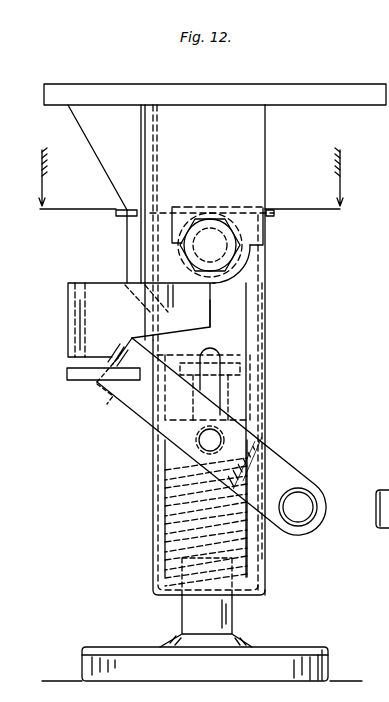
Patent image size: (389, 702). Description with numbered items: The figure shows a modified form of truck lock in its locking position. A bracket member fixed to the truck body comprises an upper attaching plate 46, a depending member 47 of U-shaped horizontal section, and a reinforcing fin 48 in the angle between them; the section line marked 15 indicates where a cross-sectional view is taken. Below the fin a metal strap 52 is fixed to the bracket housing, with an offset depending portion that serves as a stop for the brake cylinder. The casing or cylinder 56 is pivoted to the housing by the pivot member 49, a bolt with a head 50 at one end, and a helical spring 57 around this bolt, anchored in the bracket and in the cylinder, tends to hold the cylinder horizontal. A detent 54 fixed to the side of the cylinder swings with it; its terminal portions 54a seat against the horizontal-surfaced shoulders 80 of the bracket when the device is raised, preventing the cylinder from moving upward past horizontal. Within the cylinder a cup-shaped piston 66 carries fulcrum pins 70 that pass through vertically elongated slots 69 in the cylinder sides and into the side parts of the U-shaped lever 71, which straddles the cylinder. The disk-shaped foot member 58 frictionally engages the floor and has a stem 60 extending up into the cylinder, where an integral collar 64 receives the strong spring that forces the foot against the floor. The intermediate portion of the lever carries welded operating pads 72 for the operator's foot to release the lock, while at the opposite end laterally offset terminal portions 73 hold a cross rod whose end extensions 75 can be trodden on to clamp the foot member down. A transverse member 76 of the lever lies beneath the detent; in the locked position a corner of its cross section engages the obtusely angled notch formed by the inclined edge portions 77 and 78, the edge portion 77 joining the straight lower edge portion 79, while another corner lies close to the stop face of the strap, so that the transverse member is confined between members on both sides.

The upper attaching plate 46 is at (308, 97).
The depending member 47 is at (252, 150).
The reinforcing fin 48 is at (93, 127).
The section line 15- 15 is at (191, 178).
The pivot member 49 is at (247, 232).
The head 50 is at (228, 260).
The metal strap 52 is at (127, 258).
The detent 54 is at (82, 312).
The terminal portions of the detent 54a is at (210, 303).
The cylinder 56 is at (240, 330).
The helical spring 57 is at (240, 208).
The foot member 58 is at (284, 655).
The stem 60 is at (197, 613).
The collar 64 is at (266, 563).
The piston 66 is at (245, 352).
The slots 69 is at (215, 385).
The fulcrum pins 70 is at (200, 440).
The lever 71 is at (291, 473).
The operating pads 72 is at (80, 382).
The laterally offset terminal portions 73 is at (301, 483).
The end extensions 75 is at (303, 514).
The transverse member 76 is at (113, 398).
The inclined edge portion 77 is at (116, 350).
The inclined edge portion 78 is at (140, 336).
The straight lower edge portion 79 is at (100, 358).
The shoulders 80 is at (262, 250).